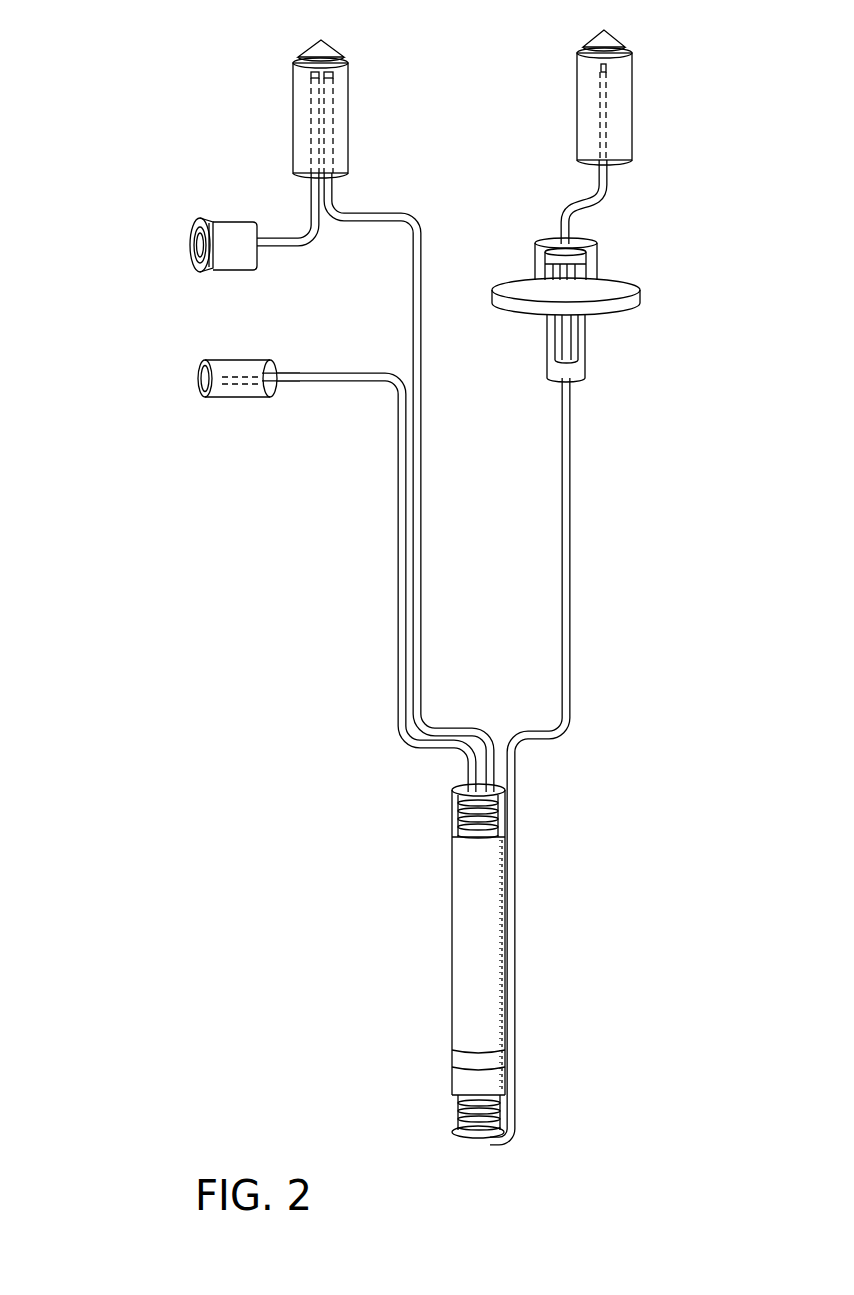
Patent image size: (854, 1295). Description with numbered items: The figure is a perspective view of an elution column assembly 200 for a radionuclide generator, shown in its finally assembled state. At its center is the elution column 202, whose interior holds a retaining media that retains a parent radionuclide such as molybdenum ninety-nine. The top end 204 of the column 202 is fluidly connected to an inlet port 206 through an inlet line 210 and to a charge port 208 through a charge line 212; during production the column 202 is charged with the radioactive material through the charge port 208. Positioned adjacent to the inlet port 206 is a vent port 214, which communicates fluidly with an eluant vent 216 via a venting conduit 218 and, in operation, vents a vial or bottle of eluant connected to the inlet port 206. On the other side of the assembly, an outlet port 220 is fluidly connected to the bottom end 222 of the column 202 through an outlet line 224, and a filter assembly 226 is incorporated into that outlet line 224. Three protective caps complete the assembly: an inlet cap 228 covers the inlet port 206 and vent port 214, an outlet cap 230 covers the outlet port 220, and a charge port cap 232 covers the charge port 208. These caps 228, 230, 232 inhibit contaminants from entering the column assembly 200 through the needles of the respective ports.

The elution column assembly 200 is at (148, 48).
The elution column 202 is at (452, 935).
The top end 204 is at (466, 786).
The inlet port 206 is at (336, 116).
The charge port 208 is at (245, 370).
The inlet line 210 is at (425, 590).
The charge line 212 is at (396, 545).
The vent port 214 is at (305, 118).
The eluant vent 216 is at (227, 221).
The venting conduit 218 is at (311, 234).
The outlet port 220 is at (608, 107).
The bottom end 222 is at (466, 1134).
The outlet line 224 is at (573, 540).
The filter assembly 226 is at (507, 308).
The inlet cap 228 is at (349, 78).
The outlet cap 230 is at (633, 86).
The charge port cap 232 is at (222, 398).